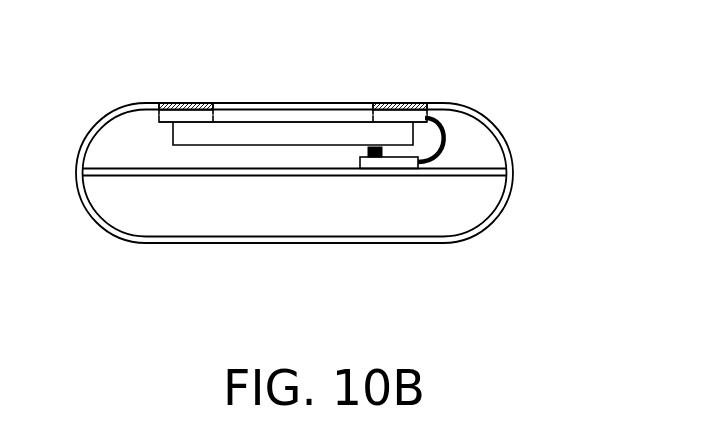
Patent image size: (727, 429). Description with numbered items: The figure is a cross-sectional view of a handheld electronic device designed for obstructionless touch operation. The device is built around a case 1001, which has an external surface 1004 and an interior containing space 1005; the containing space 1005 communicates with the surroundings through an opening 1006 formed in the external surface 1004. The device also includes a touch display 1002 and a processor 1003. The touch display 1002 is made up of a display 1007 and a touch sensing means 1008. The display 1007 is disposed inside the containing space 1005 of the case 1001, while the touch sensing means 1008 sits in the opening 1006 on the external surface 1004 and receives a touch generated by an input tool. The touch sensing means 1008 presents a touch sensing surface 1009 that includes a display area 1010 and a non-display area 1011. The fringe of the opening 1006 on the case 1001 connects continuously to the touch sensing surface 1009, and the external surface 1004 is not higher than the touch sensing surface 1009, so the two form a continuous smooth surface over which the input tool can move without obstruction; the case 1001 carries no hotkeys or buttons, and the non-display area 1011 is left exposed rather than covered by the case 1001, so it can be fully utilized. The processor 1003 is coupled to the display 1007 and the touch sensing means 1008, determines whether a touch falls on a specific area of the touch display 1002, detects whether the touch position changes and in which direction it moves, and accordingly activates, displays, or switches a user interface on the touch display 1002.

The case 1001 is at (339, 167).
The touch display 1002 is at (263, 158).
The processor 1003 is at (403, 163).
The external surface 1004 is at (480, 117).
The containing space 1005 is at (477, 150).
The opening 1006 is at (427, 108).
The display 1007 is at (293, 135).
The touch sensing means 1008 is at (232, 115).
The touch sensing surface 1009 is at (400, 102).
The display area 1010 is at (255, 102).
The non-display area 1011 is at (188, 102).